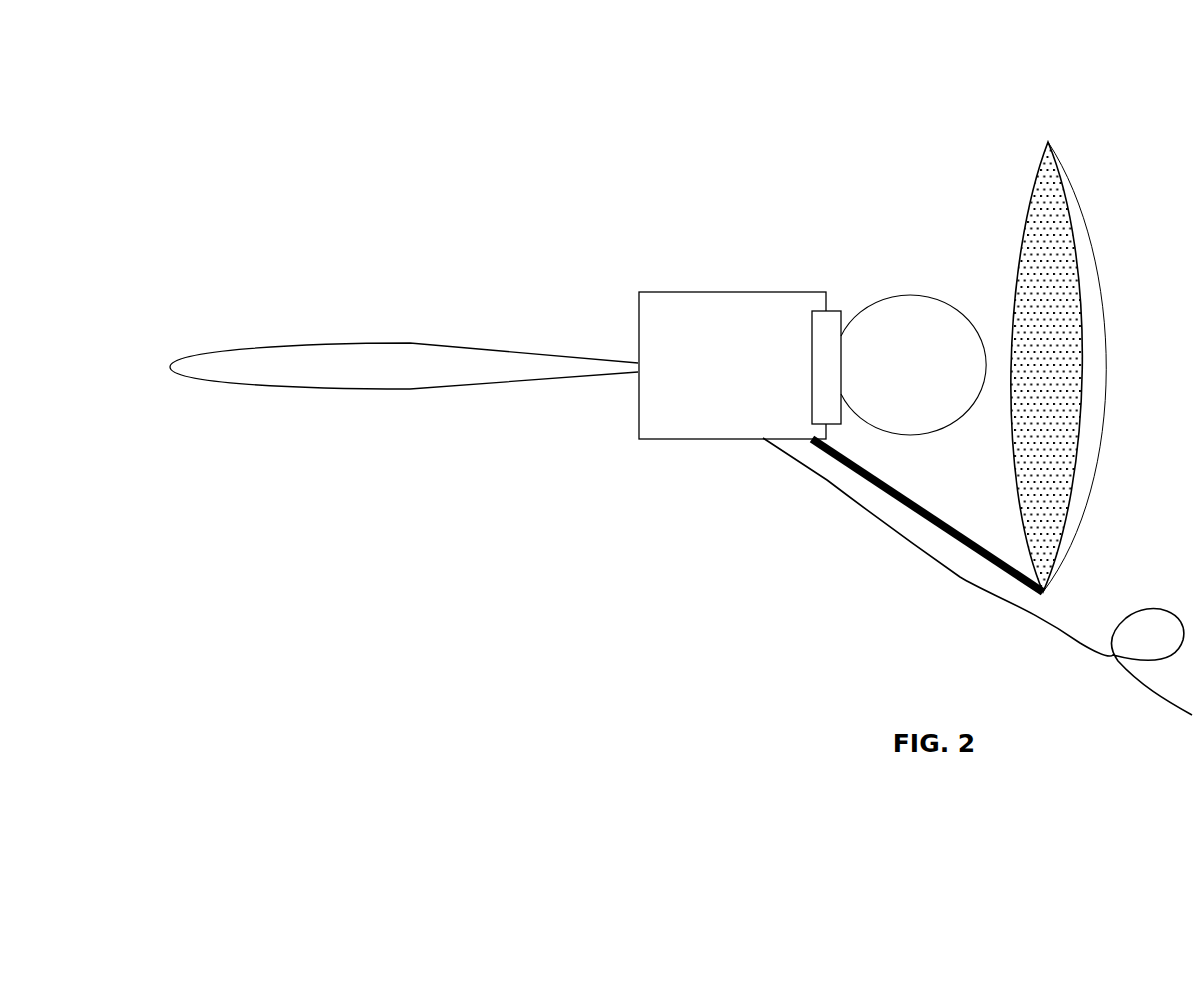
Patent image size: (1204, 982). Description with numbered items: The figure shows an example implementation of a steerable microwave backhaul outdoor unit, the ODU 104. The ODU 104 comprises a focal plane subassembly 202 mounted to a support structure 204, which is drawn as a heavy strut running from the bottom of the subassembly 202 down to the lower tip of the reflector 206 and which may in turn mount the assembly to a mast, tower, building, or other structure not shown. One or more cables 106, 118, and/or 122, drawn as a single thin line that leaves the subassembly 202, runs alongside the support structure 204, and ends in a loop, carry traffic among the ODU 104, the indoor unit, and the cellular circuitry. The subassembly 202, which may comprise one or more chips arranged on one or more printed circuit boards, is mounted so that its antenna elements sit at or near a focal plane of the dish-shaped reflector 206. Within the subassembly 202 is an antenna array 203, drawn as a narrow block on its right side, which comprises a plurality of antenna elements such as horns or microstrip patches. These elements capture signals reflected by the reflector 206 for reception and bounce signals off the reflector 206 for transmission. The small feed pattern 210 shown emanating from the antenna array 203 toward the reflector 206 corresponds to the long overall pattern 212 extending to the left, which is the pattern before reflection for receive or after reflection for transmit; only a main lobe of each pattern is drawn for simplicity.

The ODU 104 is at (677, 108).
The radiation pattern 212 is at (333, 342).
The subassembly 202 is at (732, 365).
The antenna array 203 is at (826, 367).
The radiation pattern 210 is at (917, 299).
The reflector 206 is at (1050, 141).
The support structure 204 is at (922, 512).
The cable 106 is at (977, 576).
The cable 118 is at (977, 576).
The cable 122 is at (992, 594).